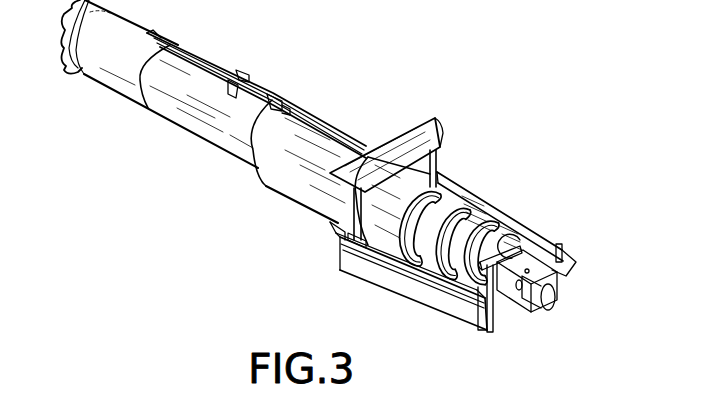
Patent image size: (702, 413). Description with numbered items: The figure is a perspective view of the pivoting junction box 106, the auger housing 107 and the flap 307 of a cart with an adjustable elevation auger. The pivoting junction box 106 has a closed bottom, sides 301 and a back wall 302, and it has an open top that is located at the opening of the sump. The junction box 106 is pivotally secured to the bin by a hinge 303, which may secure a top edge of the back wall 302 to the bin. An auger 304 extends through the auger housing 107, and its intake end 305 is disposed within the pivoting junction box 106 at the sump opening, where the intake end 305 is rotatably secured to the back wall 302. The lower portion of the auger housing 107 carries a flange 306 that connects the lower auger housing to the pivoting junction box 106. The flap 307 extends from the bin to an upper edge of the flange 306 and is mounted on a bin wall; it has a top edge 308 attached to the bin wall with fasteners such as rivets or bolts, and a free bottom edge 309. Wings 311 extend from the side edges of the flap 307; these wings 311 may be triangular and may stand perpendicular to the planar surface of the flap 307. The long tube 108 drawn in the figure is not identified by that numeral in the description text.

The pivoting junction box 106 is at (447, 310).
The auger housing 107 is at (210, 148).
The tube 108 is at (180, 126).
The sides 301 is at (377, 273).
The back wall 302 is at (505, 312).
The hinge 303 is at (491, 334).
The auger 304 is at (497, 222).
The intake end 305 is at (477, 207).
The flange 306 is at (333, 220).
The flap 307 is at (400, 150).
The top edge 308 is at (388, 144).
The free bottom edge 309 is at (440, 168).
The wings 311 is at (443, 124).